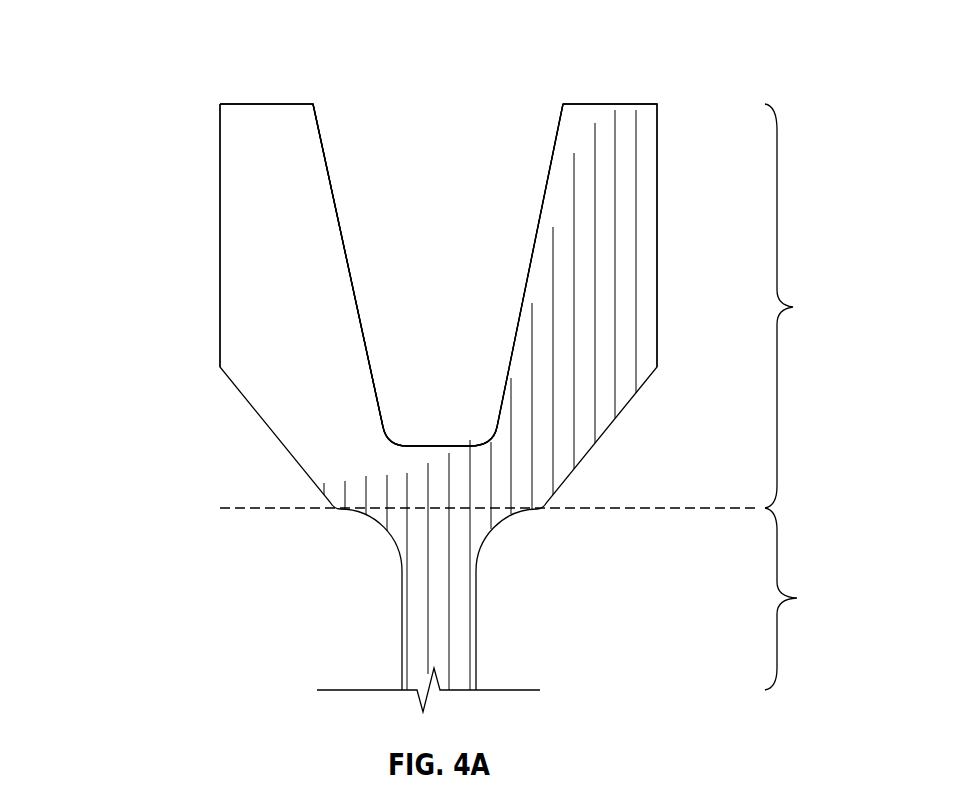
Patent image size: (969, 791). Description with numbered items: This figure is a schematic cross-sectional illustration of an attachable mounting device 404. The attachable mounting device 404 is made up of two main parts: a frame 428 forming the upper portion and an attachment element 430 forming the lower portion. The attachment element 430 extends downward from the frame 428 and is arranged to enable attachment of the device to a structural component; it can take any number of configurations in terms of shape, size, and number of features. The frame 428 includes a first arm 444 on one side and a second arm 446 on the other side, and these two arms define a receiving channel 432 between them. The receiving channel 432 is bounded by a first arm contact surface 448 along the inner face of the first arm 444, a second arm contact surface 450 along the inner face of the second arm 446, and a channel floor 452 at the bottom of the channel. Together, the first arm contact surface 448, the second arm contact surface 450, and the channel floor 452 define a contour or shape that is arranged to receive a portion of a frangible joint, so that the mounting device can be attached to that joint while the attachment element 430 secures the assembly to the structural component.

The attachable mounting device 404 is at (158, 302).
The frame 428 is at (806, 306).
The attachment element 430 is at (806, 599).
The receiving channel 432 is at (442, 147).
The first arm 444 is at (253, 208).
The second arm 446 is at (627, 262).
The first arm contact surface 448 is at (332, 188).
The second arm contact surface 450 is at (548, 188).
The channel floor 452 is at (438, 440).